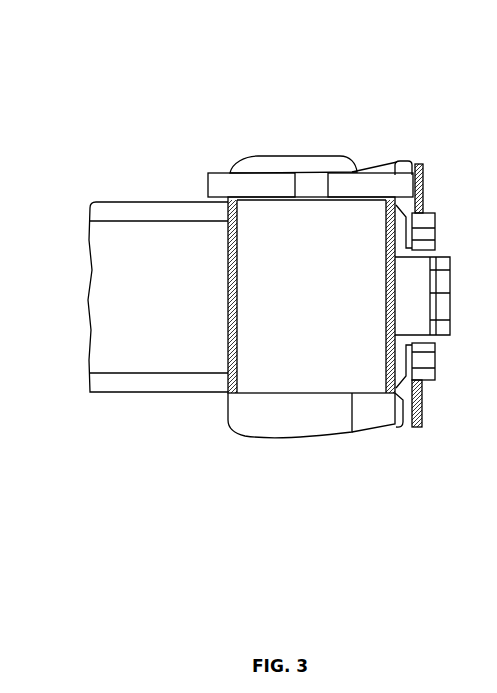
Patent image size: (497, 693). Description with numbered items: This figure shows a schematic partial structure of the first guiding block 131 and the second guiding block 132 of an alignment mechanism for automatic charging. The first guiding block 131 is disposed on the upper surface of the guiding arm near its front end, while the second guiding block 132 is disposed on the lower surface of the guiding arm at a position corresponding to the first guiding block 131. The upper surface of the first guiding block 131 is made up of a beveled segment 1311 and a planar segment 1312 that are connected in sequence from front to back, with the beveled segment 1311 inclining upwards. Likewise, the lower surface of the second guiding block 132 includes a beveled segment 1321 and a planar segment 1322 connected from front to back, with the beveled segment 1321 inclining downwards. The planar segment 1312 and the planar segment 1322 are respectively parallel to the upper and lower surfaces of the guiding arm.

The first guiding block 131 is at (310, 109).
The planar segment of first guiding block 1312 is at (294, 152).
The beveled segment of first guiding block 1311 is at (372, 162).
The second guiding block 132 is at (316, 487).
The planar segment of second guiding block 1322 is at (282, 438).
The beveled segment of second guiding block 1321 is at (372, 433).